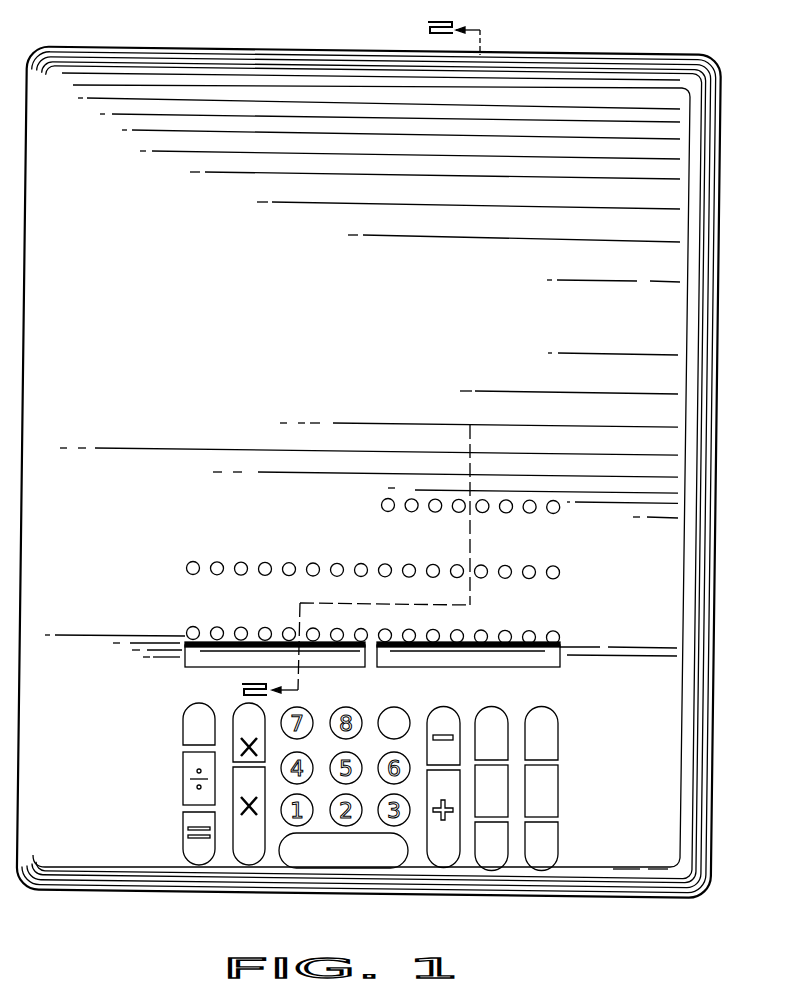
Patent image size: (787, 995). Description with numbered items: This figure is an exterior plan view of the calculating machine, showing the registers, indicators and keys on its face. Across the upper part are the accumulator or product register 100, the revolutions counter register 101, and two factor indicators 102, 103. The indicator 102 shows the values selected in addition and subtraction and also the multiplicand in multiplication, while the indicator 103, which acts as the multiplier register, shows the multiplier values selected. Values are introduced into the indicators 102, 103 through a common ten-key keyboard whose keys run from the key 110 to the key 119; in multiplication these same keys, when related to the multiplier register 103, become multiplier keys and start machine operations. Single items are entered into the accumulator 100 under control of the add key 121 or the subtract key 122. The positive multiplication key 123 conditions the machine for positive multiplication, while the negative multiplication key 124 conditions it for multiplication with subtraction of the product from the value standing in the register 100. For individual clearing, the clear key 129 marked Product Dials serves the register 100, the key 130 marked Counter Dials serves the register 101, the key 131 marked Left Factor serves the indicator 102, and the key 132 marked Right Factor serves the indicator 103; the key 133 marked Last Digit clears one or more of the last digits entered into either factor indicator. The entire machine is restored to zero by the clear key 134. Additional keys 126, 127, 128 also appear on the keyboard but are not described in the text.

The product register 100 is at (186, 568).
The revolutions counter register 101 is at (381, 505).
The factor indicator 102 is at (187, 630).
The factor indicator 103 is at (557, 633).
The key 110 is at (343, 862).
The key 119 is at (385, 716).
The add key 121 is at (442, 865).
The subtract key 122 is at (438, 718).
The positive multiplication key 123 is at (249, 858).
The negative multiplication key 124 is at (245, 712).
The divide key 126 is at (183, 781).
The stop key 127 is at (183, 736).
The equals key 128 is at (183, 832).
The clear key 129 is at (485, 720).
The key 130 is at (551, 742).
The key 131 is at (500, 793).
The key 132 is at (549, 792).
The key 133 is at (492, 866).
The clear key 134 is at (550, 836).